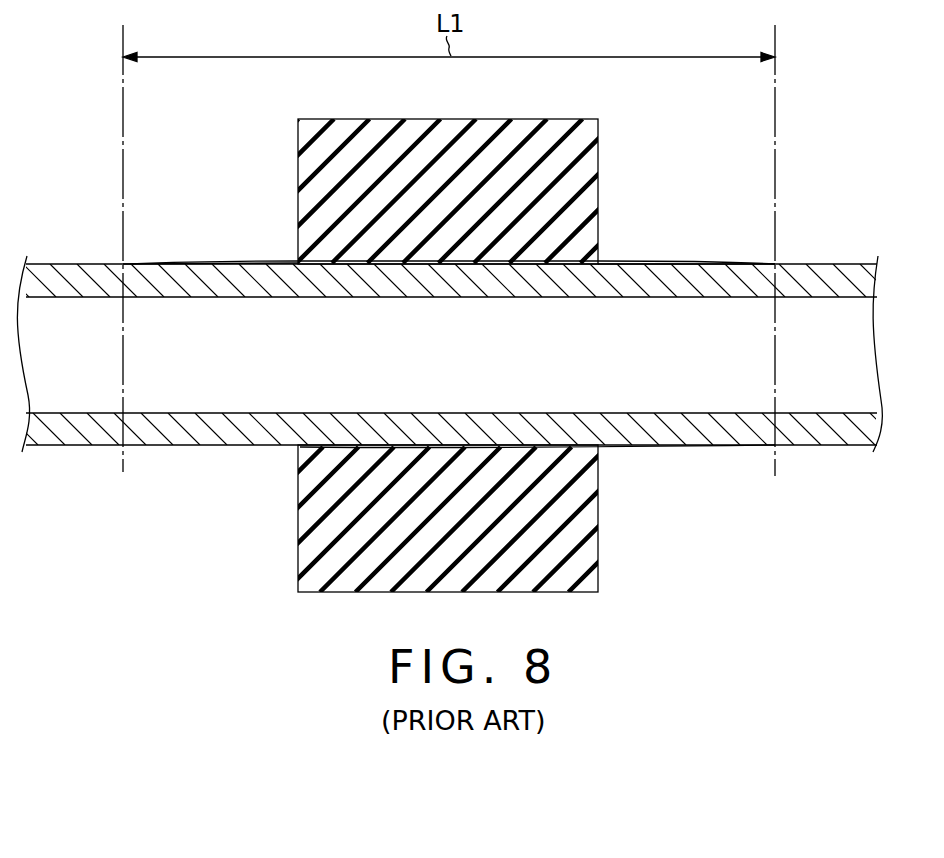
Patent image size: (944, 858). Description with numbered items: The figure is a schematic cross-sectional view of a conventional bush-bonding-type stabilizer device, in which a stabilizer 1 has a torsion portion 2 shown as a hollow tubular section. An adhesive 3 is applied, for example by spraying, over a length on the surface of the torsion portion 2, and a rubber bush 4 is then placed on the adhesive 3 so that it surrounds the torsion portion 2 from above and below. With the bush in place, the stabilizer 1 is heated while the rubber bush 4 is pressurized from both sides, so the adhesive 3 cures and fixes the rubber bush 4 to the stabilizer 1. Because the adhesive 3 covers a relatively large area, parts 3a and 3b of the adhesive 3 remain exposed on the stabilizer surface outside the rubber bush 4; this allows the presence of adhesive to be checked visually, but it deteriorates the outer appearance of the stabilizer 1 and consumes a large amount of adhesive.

The stabilizer 1 is at (806, 264).
The torsion portion 2 is at (660, 436).
The adhesive 3 is at (378, 262).
The part of the adhesive 3a is at (661, 264).
The part of the adhesive 3b is at (227, 263).
The rubber bush 4 is at (586, 160).